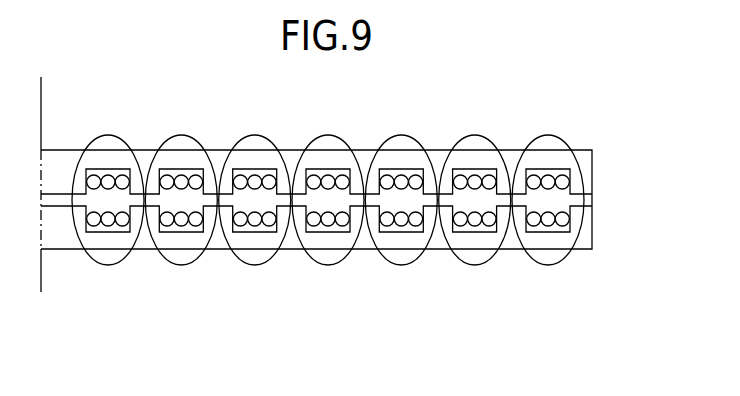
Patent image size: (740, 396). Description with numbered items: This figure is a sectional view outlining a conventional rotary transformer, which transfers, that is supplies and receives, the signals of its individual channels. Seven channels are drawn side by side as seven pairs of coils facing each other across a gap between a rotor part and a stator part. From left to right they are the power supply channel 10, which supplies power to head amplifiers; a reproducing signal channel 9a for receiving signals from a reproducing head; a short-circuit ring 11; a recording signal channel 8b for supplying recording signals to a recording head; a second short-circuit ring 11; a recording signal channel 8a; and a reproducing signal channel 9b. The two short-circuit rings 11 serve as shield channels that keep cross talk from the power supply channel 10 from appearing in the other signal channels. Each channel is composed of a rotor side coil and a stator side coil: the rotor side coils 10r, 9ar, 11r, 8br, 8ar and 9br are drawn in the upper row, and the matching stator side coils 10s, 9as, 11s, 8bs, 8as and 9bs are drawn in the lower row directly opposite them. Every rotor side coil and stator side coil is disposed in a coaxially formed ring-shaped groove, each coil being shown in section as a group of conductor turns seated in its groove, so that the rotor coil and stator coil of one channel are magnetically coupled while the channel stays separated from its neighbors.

The power supply channel 10 is at (119, 223).
The reproducing signal channel 9a is at (192, 223).
The short-circuit ring 11 is at (338, 223).
The recording signal channel 8b is at (340, 223).
The recording signal channel 8a is at (483, 223).
The reproducing signal channel 9b is at (554, 223).
The rotor side coil 10r is at (108, 182).
The rotor side coil 9ar is at (181, 182).
The rotor side coil 11r is at (255, 182).
The rotor side coil 8br is at (328, 182).
The rotor side coil 8ar is at (475, 182).
The rotor side coil 9br is at (548, 182).
The stator side coil 10s is at (108, 219).
The stator side coil 9as is at (181, 219).
The stator side coil 11s is at (255, 219).
The stator side coil 8bs is at (328, 219).
The stator side coil 8as is at (475, 219).
The stator side coil 9bs is at (548, 219).